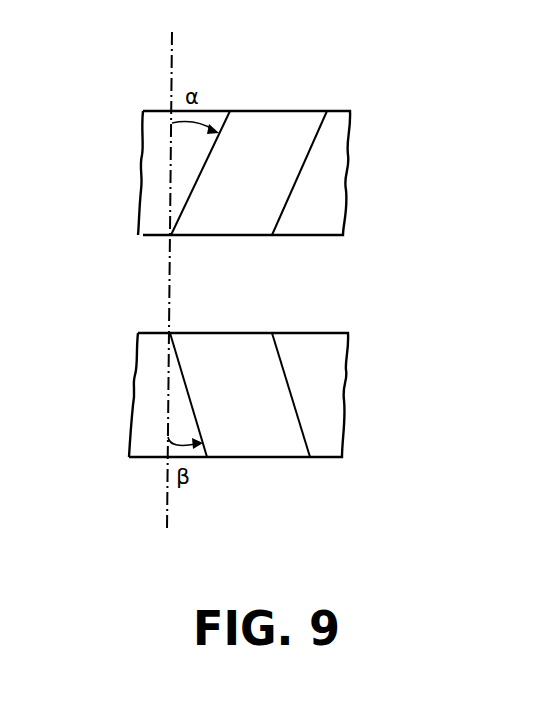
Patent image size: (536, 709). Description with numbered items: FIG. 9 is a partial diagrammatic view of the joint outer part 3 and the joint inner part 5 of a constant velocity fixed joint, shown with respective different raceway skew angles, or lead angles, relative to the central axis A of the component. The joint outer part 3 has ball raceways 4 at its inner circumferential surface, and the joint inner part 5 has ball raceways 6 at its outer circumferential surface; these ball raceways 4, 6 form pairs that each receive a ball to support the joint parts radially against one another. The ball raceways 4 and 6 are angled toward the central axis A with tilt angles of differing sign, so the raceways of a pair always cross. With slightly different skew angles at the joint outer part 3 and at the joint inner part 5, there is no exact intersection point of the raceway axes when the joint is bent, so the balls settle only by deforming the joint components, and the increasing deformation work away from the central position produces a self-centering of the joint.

The central axis A is at (170, 62).
The joint outer part 3 is at (330, 128).
The ball raceways 4 is at (279, 170).
The joint inner part 5 is at (315, 345).
The ball raceways 6 is at (262, 407).